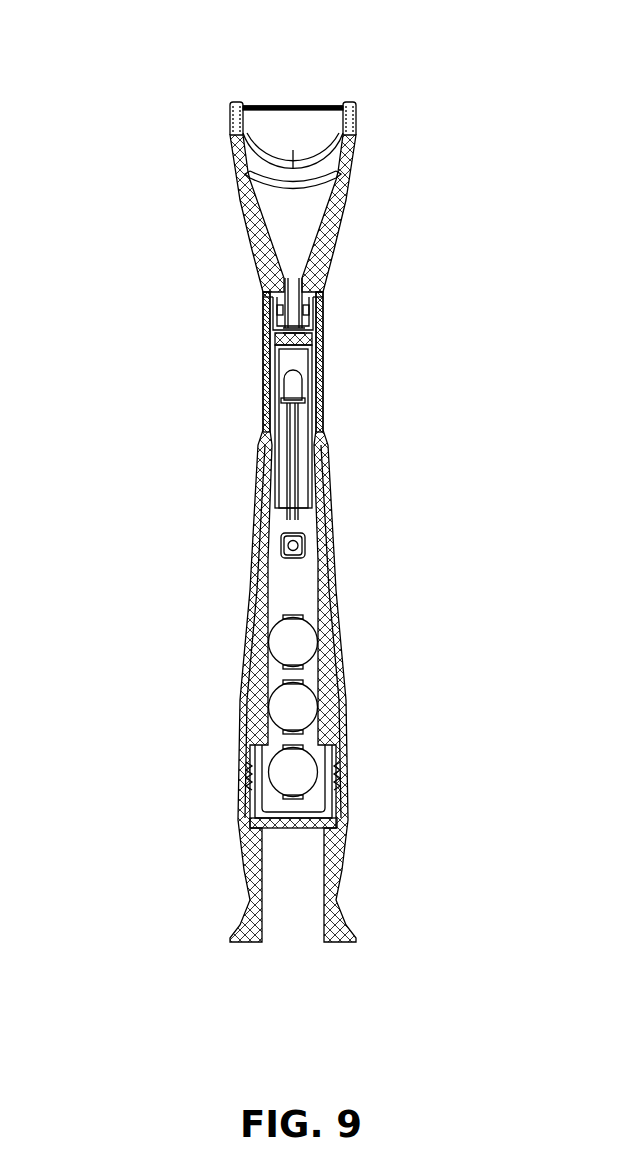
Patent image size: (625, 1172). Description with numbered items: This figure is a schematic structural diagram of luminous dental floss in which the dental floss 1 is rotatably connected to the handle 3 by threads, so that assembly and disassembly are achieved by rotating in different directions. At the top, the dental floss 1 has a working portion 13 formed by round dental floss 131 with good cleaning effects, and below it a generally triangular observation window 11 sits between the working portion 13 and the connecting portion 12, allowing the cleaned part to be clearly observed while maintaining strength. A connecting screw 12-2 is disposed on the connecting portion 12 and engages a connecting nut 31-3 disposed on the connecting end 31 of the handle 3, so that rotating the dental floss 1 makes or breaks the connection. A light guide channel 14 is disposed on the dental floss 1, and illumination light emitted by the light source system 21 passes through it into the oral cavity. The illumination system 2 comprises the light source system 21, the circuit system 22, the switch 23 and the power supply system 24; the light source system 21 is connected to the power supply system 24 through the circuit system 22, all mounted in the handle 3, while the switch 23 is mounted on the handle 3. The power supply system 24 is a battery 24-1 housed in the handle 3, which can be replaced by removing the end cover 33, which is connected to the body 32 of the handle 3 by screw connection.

The dental floss 1 is at (352, 160).
The observation window 11 is at (290, 237).
The working portion 13 is at (300, 105).
The round dental floss 131 is at (280, 106).
The light guide channel 14 is at (268, 298).
The connecting portion 12 is at (296, 304).
The connecting screw 12-2 is at (322, 322).
The illumination system 2 is at (308, 518).
The light source system 21 is at (324, 388).
The circuit system 22 is at (285, 476).
The switch 23 is at (281, 554).
The power supply system 24 is at (292, 642).
The battery 24-1 is at (292, 716).
The handle 3 is at (242, 656).
The connecting end 31 is at (262, 350).
The connecting nut 31-3 is at (276, 310).
The body 32 is at (346, 683).
The end cover 33 is at (344, 802).